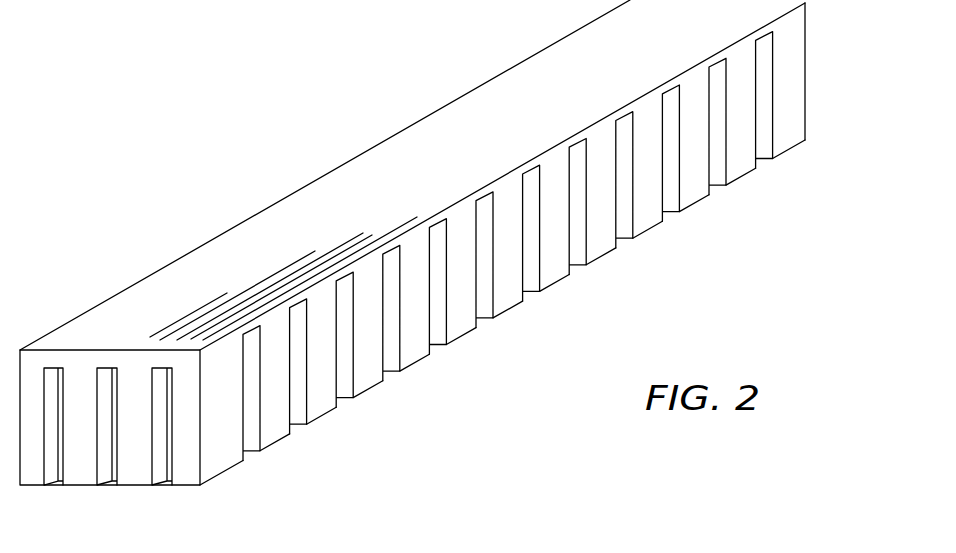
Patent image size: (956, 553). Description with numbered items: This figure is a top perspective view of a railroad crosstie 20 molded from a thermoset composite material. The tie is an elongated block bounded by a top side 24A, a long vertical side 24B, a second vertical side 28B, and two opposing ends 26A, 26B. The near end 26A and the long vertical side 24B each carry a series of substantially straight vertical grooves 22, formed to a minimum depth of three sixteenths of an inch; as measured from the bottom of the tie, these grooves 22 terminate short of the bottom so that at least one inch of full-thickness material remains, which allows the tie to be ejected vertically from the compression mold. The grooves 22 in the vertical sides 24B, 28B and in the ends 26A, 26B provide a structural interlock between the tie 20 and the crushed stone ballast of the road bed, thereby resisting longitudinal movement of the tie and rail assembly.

The slotted bar 20 is at (303, 160).
The slots 22 is at (173, 427).
The top face 24A is at (210, 263).
The front side face 24B is at (465, 335).
The opposing end 26A is at (83, 467).
The opposing end 26B is at (805, 65).
The vertical side 28B is at (598, 230).